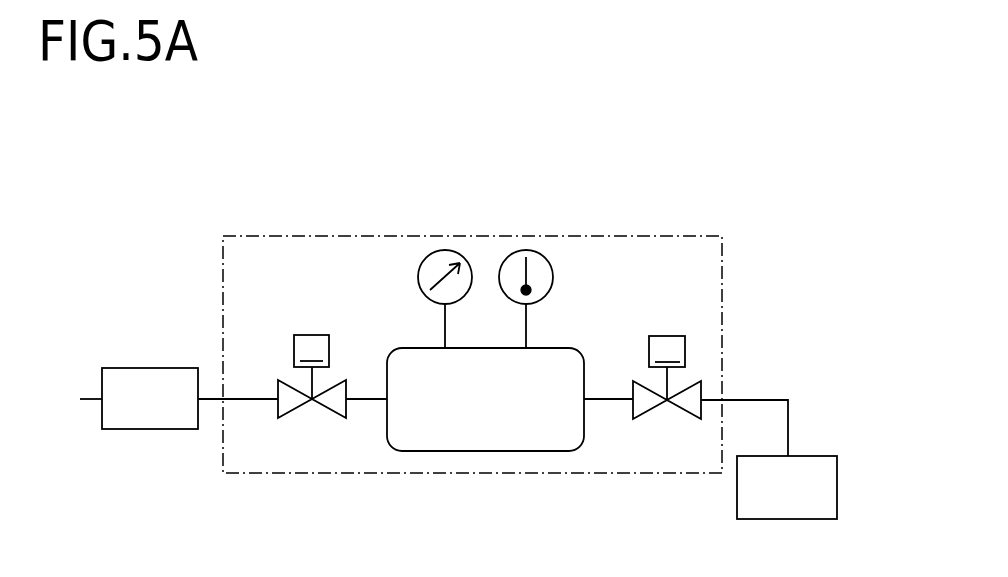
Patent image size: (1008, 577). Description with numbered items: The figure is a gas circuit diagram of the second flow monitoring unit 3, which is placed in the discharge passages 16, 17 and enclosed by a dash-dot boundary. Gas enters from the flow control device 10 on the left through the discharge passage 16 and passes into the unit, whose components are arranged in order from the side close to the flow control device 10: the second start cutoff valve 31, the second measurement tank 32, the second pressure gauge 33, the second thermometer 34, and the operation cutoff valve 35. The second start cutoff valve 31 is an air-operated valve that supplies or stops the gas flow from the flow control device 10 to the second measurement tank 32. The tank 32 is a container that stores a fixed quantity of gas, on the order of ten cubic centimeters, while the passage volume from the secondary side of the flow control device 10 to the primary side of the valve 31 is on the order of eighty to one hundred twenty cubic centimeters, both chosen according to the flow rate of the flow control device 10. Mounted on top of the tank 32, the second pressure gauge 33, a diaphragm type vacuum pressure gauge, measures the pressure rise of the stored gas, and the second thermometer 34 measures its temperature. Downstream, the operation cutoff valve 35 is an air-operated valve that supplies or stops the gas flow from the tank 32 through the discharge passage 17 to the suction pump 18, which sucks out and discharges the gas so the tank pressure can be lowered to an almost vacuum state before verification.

The second flow monitoring unit 3 is at (672, 236).
The flow control device 10 is at (153, 368).
The discharge passage 16 is at (247, 399).
The second start cutoff valve 31 is at (315, 335).
The second measurement tank 32 is at (480, 452).
The second pressure gauge 33 is at (448, 250).
The second thermometer 34 is at (530, 250).
The operation cutoff valve 35 is at (667, 336).
The discharge passage 17 is at (772, 398).
The suction pump 18 is at (820, 456).